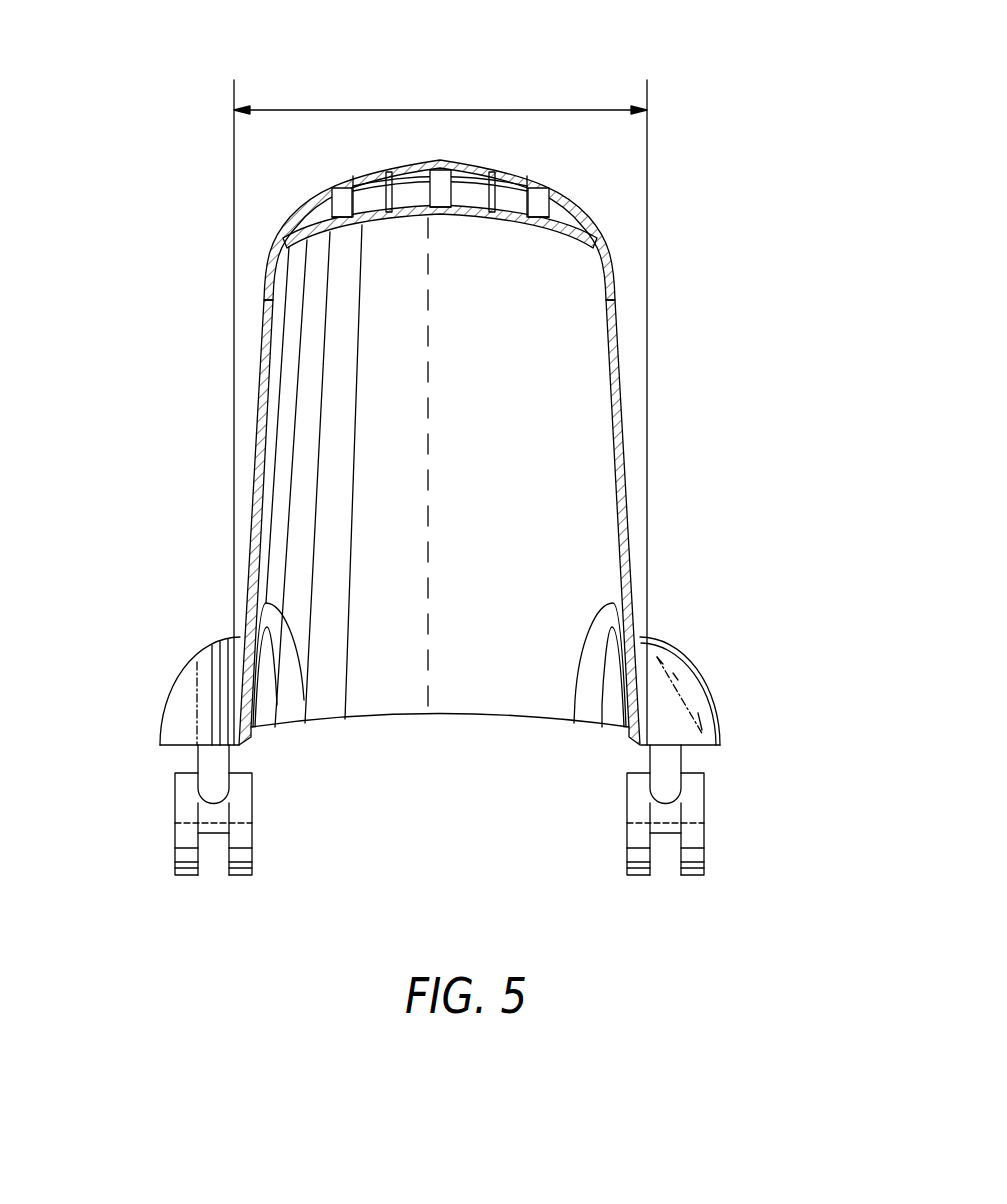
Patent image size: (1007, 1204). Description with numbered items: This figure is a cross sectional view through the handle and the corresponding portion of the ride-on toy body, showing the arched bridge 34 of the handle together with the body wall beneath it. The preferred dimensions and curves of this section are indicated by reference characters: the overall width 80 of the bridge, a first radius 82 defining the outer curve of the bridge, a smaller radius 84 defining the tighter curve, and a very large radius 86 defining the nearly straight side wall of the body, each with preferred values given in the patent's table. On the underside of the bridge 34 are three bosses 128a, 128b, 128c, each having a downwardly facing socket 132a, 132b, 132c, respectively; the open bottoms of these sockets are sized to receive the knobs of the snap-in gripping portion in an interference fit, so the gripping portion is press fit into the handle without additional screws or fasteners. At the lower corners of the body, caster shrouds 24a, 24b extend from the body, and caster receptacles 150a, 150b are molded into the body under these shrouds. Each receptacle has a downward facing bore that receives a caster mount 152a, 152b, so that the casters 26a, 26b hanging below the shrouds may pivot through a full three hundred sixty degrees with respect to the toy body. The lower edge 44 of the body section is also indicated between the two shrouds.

The width dimension 80 is at (440, 110).
The radius dimension 82 is at (466, 168).
The radius dimension 84 is at (562, 191).
The radius dimension 86 is at (622, 455).
The bridge 34 is at (412, 163).
The boss 128a is at (549, 208).
The boss 128b is at (452, 190).
The boss 128c is at (332, 205).
The socket 132a is at (339, 218).
The socket 132b is at (441, 202).
The socket 132c is at (541, 219).
The bottom edge 44 is at (400, 715).
The caster shroud 24a is at (185, 677).
The caster shroud 24b is at (675, 666).
The caster receptacle 150a is at (212, 745).
The caster receptacle 150b is at (668, 744).
The caster mount 152a is at (197, 755).
The caster mount 152b is at (682, 758).
The caster 26a is at (175, 824).
The caster 26b is at (704, 823).